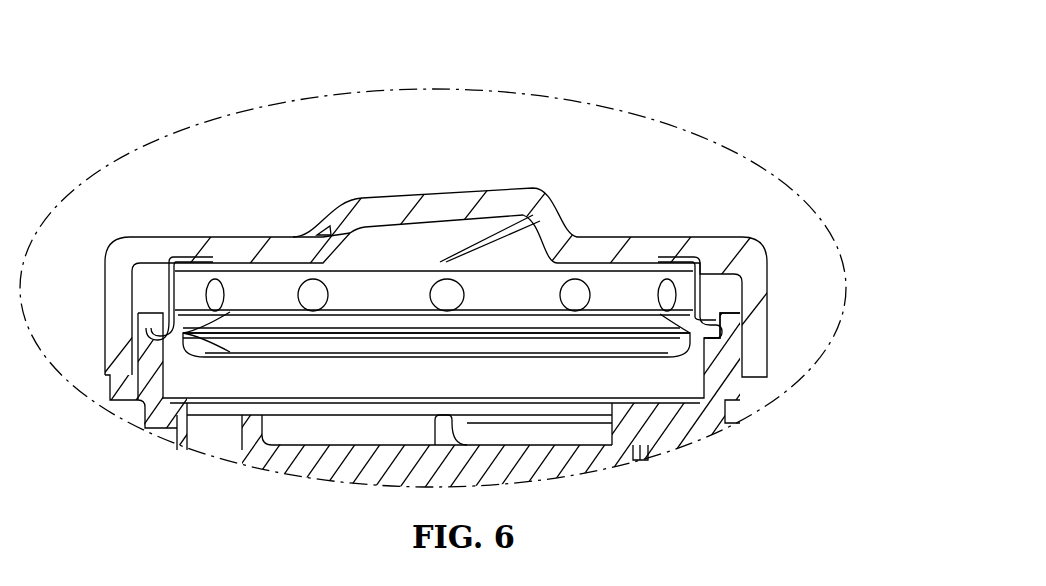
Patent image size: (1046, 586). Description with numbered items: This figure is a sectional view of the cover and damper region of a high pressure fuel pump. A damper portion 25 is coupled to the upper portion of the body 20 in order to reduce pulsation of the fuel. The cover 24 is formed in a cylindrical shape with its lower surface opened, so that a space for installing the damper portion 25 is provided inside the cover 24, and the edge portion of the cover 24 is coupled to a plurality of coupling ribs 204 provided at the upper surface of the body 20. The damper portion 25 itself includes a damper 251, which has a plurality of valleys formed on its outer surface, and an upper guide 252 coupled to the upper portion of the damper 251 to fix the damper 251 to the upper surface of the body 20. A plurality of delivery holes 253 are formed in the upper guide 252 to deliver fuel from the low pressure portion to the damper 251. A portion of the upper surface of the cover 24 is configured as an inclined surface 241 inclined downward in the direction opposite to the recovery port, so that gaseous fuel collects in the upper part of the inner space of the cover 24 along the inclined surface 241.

The body 20 is at (723, 378).
The cover 24 is at (242, 248).
The inclined surface 241 is at (413, 210).
The damper portion 25 is at (464, 183).
The damper 251 is at (622, 310).
The upper guide 252 is at (700, 267).
The delivery holes 253 is at (573, 293).
The coupling ribs 204 is at (735, 327).